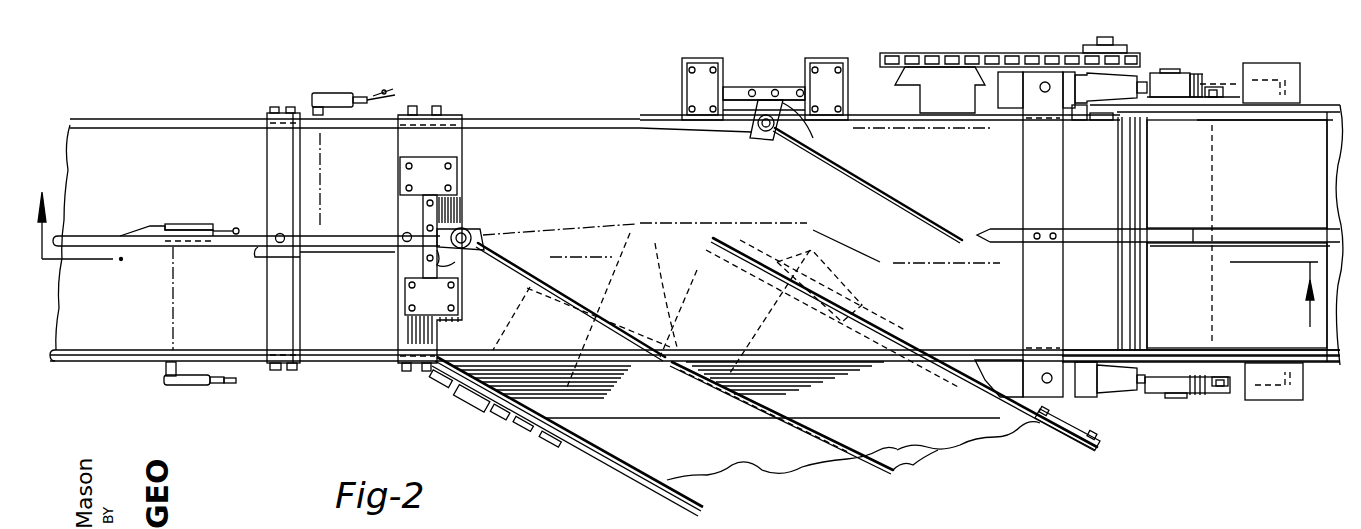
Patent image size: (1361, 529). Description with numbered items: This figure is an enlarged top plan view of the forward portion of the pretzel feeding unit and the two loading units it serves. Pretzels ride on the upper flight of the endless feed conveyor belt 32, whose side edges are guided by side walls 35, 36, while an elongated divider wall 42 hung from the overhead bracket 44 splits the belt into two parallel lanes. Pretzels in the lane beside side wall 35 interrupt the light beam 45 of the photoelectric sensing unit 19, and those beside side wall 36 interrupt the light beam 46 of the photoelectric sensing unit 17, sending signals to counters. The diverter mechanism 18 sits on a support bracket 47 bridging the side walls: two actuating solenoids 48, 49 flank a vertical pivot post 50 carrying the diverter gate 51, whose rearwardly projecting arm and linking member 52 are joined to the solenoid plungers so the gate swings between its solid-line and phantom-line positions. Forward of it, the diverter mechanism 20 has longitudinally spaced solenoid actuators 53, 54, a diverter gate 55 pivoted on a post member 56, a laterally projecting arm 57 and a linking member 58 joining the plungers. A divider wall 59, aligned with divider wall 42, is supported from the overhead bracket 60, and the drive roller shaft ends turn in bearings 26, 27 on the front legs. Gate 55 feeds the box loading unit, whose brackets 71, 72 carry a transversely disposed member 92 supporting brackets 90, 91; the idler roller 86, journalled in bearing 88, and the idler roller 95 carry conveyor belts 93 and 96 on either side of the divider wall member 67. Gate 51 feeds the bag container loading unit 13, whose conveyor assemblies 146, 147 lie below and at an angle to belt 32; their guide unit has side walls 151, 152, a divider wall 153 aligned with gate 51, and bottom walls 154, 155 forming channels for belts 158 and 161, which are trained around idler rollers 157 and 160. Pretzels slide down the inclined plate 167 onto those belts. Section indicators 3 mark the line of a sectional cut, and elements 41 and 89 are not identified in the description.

The section line 3- 3 is at (678, 259).
The bag container loading unit 13 is at (690, 513).
The photoelectric sensing unit 17 is at (182, 390).
The diverter mechanism 18 is at (452, 111).
The photoelectric sensing unit 19 is at (338, 88).
The diverter mechanism 20 is at (719, 53).
The bearing 26 is at (1128, 75).
The bearing 27 is at (1127, 395).
The endless conveyor belt 32 is at (565, 127).
The side wall 35 is at (180, 118).
The side wall 36 is at (108, 362).
The drive chain 41 is at (1043, 57).
The divider wall 42 is at (136, 248).
The overhead bracket 44 is at (300, 305).
The light beam 45 is at (325, 163).
The light beam 46 is at (175, 292).
The support bracket 47 is at (465, 207).
The actuating solenoid 48 is at (452, 175).
The actuating solenoid 49 is at (455, 302).
The vertical pivot post 50 is at (471, 230).
The diverter gate 51 is at (575, 298).
The linking member 52 is at (424, 212).
The solenoid actuator 53 is at (697, 89).
The solenoid actuator 54 is at (838, 92).
The diverter gate 55 is at (892, 128).
The post member 56 is at (760, 140).
The laterally projecting arm 57 is at (789, 108).
The linking member 58 is at (772, 86).
The divider wall 59 is at (1098, 243).
The overhead bracket 60 is at (1033, 179).
The divider wall member 67 is at (1298, 234).
The bracket 71 is at (1213, 80).
The bracket 72 is at (1220, 390).
The idler roller 86 is at (1214, 213).
The bearing 88 is at (1175, 82).
The gear box 89 is at (1179, 394).
The bracket 90 is at (1306, 104).
The bracket 91 is at (1313, 366).
The transversely disposed member 92 is at (1287, 73).
The conveyor belt 93 is at (1260, 181).
The idler roller 95 is at (1213, 300).
The endless conveyor belt 96 is at (1233, 327).
The conveyor assembly 146 is at (630, 450).
The conveyor assembly 147 is at (996, 441).
The side wall 151 is at (640, 485).
The side wall 152 is at (900, 338).
The divider wall 153 is at (805, 428).
The bottom wall 154 is at (747, 490).
The bottom wall 155 is at (937, 469).
The idler roller 157 is at (467, 367).
The endless conveyor belt 158 is at (686, 452).
The idler roller 160 is at (885, 312).
The endless conveyor belt 161 is at (908, 437).
The inclined plate 167 is at (662, 397).